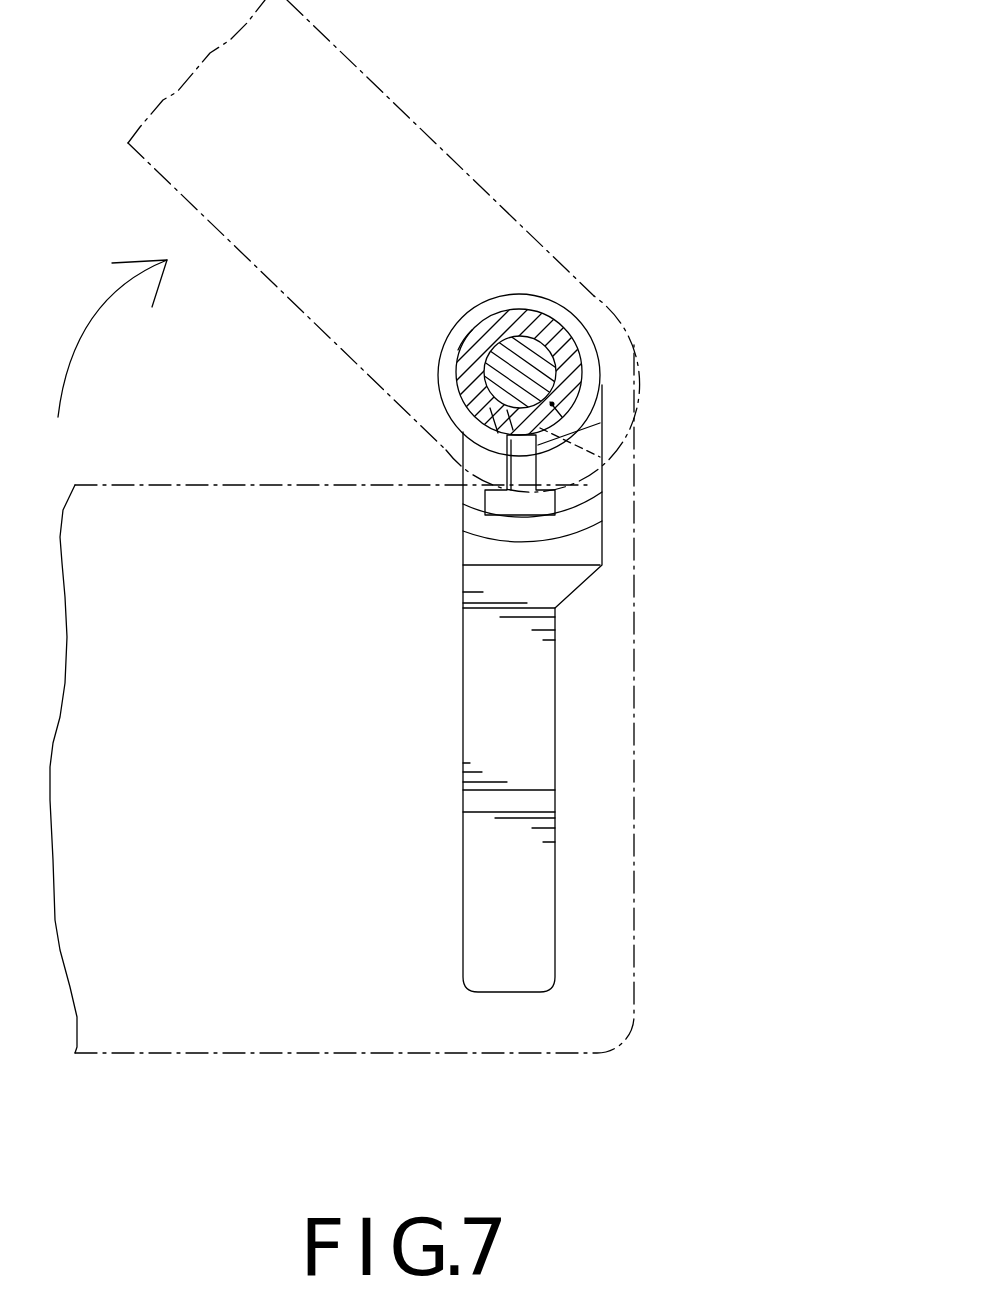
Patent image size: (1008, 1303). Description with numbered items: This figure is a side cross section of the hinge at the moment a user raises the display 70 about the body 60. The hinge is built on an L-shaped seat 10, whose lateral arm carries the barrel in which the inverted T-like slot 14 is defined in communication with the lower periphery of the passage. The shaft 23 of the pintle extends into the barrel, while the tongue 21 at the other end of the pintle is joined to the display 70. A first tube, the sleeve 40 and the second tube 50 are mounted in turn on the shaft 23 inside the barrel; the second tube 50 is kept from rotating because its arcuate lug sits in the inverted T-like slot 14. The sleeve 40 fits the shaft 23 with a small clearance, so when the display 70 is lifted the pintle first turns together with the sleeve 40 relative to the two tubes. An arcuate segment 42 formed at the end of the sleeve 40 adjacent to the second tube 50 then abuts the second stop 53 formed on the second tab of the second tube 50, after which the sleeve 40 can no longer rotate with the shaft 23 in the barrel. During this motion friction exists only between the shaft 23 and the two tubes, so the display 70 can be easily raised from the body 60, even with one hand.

The L-shaped seat 10 is at (535, 690).
The inverted T-like slot 14 is at (555, 496).
The tongue 21 is at (456, 345).
The shaft 23 is at (495, 383).
The sleeve 40 is at (545, 304).
The arcuate segment 42 is at (563, 338).
The second tube 50 is at (531, 420).
The second stop 53 is at (552, 403).
The body 60 is at (602, 878).
The display 70 is at (333, 67).